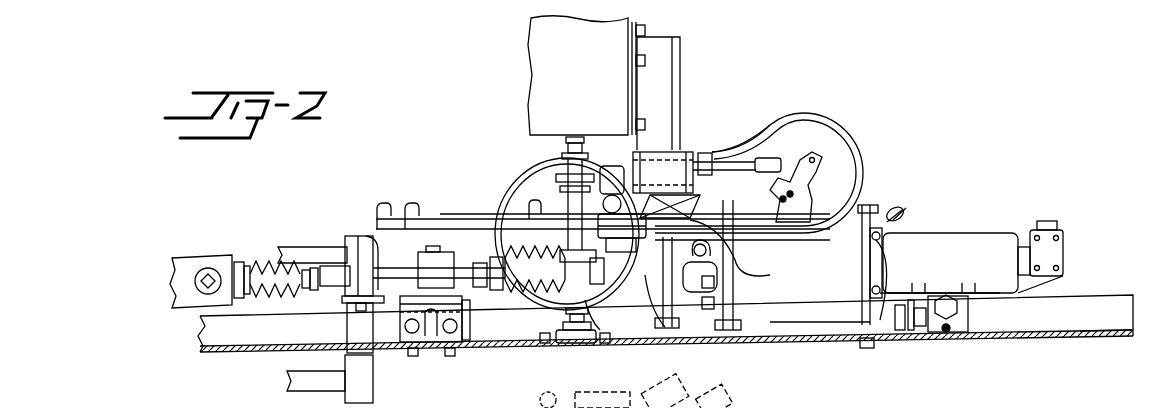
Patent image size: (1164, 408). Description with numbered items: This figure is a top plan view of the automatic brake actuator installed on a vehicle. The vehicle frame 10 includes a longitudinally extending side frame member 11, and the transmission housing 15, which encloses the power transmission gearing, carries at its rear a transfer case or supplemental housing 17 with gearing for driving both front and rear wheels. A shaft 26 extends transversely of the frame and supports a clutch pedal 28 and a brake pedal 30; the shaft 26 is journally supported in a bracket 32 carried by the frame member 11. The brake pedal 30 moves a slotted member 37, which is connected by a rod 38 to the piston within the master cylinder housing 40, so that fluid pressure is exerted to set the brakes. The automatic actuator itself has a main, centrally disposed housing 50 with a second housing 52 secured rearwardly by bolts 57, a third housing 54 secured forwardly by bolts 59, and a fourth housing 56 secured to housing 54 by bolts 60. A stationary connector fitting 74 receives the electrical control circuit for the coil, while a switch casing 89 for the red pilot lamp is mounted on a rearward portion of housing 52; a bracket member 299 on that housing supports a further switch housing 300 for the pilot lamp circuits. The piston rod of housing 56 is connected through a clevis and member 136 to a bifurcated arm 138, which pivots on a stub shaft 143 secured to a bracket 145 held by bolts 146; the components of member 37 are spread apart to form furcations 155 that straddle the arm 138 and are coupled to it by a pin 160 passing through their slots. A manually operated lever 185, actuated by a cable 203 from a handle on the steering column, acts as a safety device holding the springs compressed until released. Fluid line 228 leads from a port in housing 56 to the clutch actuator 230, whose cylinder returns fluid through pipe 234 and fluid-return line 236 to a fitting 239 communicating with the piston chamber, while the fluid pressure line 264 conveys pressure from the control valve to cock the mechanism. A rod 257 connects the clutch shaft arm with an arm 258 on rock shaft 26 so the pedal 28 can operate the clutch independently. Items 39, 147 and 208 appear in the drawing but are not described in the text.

The frame 10 is at (1050, 342).
The side frame member 11 is at (1090, 336).
The transmission housing 15 is at (548, 32).
The transfer case 17 is at (674, 48).
The shaft 26 is at (352, 392).
The clutch pedal 28 is at (300, 384).
The brake pedal 30 is at (300, 250).
The bracket 32 is at (345, 322).
The member 37 is at (352, 250).
The rod 38 is at (318, 272).
The cylinder 39 is at (335, 286).
The master cylinder housing 40 is at (216, 256).
The main housing 50 is at (822, 326).
The second housing 52 is at (983, 235).
The third housing 54 is at (726, 306).
The fourth housing 56 is at (666, 289).
The bolts 57 is at (878, 292).
The bolts 59 is at (720, 283).
The bolts 60 is at (655, 298).
The connector fitting 74 is at (900, 212).
The switch casing 89 is at (1065, 250).
The member 136 is at (481, 302).
The bifurcated arm 138 is at (424, 262).
The stub shaft 143 is at (430, 342).
The bracket 145 is at (464, 342).
The bolts 146 is at (412, 334).
The link 147 is at (583, 305).
The furcations 155 is at (516, 250).
The pin 160 is at (427, 226).
The manually operated lever 185 is at (802, 180).
The cable 203 is at (745, 140).
The tube 208 is at (745, 226).
The fluid line 228 is at (545, 178).
The clutch actuator 230 is at (663, 155).
The pipe 234 is at (666, 185).
The fluid-return line 236 is at (540, 190).
The fitting 239 is at (556, 165).
The rod 257 is at (540, 346).
The arm 258 is at (370, 275).
The fluid pressure line 264 is at (735, 240).
The bracket member 299 is at (972, 326).
The switch housing 300 is at (940, 332).